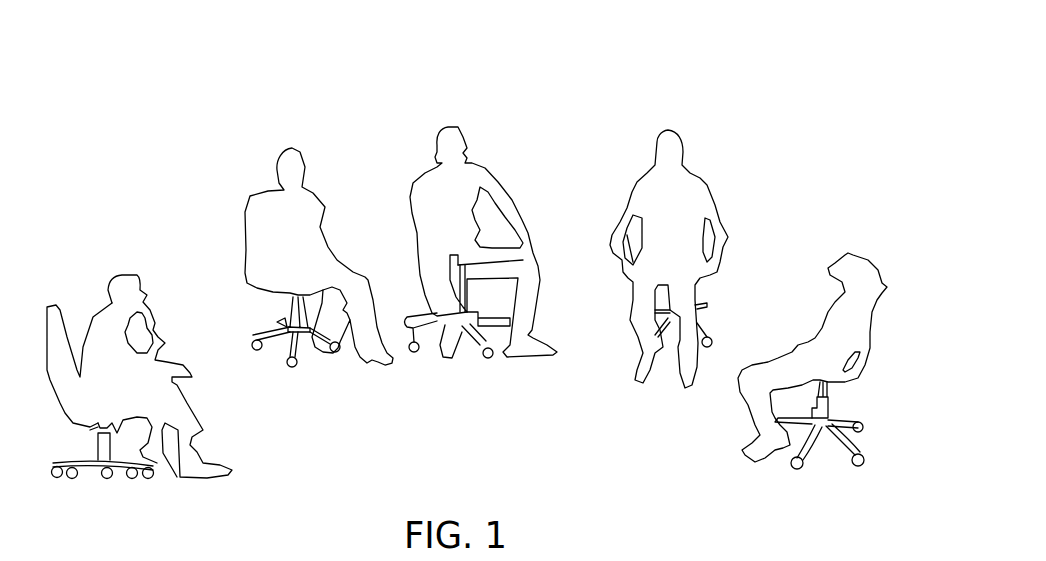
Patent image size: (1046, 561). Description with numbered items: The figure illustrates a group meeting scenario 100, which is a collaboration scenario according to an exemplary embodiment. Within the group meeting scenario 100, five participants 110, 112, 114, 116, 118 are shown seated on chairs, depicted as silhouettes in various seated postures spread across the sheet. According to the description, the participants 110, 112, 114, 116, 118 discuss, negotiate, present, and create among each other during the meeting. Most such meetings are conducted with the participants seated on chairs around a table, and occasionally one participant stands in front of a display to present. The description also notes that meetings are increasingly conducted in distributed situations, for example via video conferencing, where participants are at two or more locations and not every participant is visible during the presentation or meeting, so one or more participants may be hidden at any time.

The group meeting scenario 100 is at (790, 61).
The participant 110 is at (128, 273).
The participant 112 is at (293, 149).
The participant 114 is at (447, 127).
The participant 116 is at (670, 127).
The participant 118 is at (862, 252).